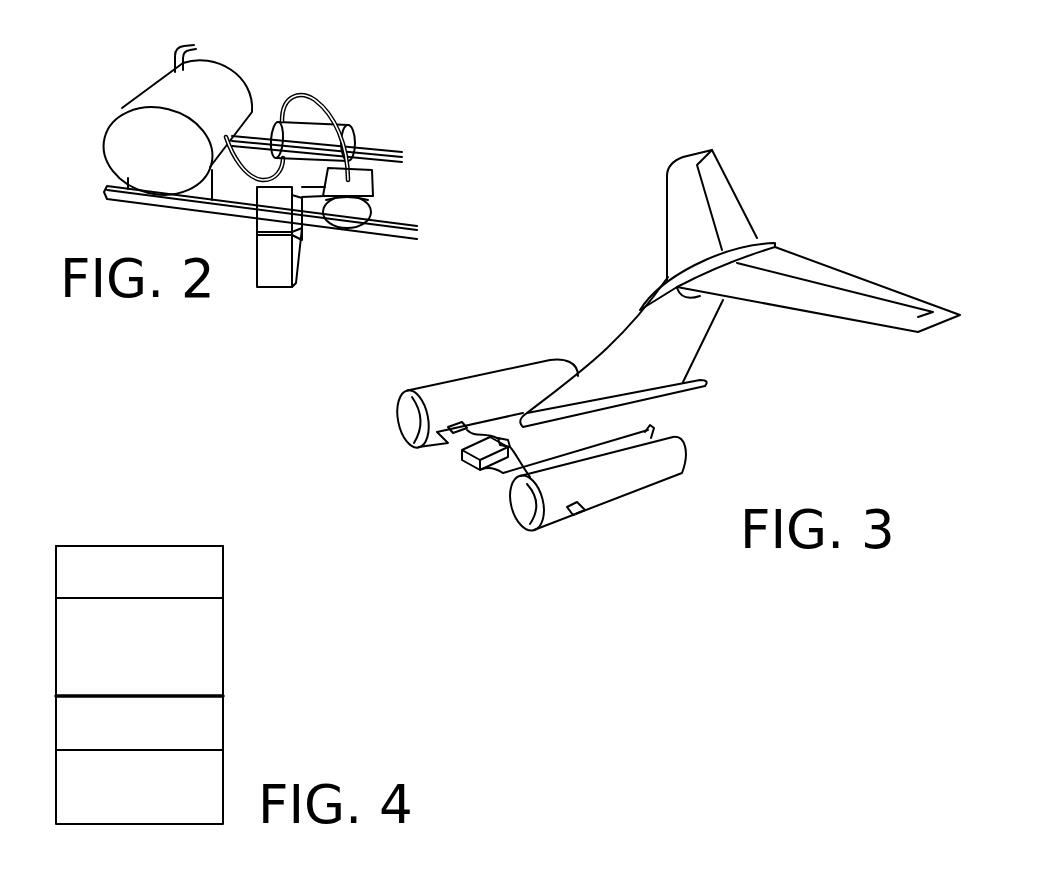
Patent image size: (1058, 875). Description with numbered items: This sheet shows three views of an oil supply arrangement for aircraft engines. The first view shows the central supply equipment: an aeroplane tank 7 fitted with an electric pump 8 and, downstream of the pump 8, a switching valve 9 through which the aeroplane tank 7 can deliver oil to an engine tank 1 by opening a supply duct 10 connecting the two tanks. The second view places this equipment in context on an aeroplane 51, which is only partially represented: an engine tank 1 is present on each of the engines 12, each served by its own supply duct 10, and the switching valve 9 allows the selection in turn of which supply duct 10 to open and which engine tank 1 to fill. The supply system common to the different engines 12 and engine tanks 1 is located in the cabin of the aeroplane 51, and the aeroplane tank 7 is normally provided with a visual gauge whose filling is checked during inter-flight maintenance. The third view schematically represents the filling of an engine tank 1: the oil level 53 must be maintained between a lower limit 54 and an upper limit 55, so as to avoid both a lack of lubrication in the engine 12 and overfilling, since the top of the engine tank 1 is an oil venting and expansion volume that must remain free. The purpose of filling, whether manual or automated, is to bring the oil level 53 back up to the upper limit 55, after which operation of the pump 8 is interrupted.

In FIG. 3, the engine tank 1 is at (457, 422).
In FIG. 4, the engine tank 1 is at (274, 635).
In FIG. 2, the aeroplane tank 7 is at (117, 138).
In FIG. 3, the aeroplane tank 7 is at (462, 458).
In FIG. 2, the electric pump 8 is at (313, 133).
In FIG. 2, the switching valve 9 is at (365, 177).
In FIG. 3, the switching valve 9 is at (513, 439).
In FIG. 3, the supply duct 10 is at (487, 430).
In FIG. 3, the engine 12 is at (551, 370).
In FIG. 3, the aeroplane 51 is at (736, 364).
In FIG. 4, the oil level 53 is at (200, 695).
In FIG. 4, the lower limit 54 is at (200, 749).
In FIG. 4, the upper limit 55 is at (200, 597).